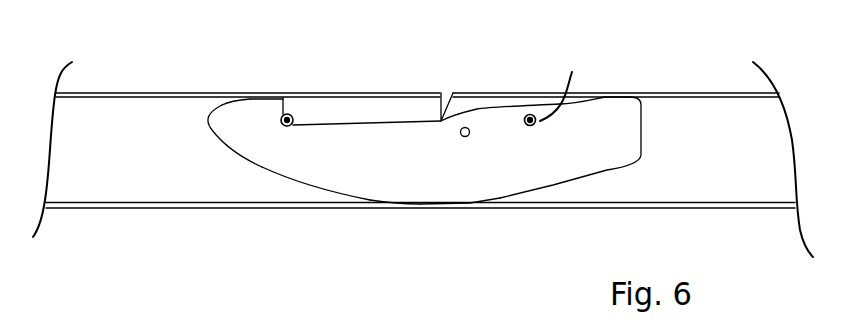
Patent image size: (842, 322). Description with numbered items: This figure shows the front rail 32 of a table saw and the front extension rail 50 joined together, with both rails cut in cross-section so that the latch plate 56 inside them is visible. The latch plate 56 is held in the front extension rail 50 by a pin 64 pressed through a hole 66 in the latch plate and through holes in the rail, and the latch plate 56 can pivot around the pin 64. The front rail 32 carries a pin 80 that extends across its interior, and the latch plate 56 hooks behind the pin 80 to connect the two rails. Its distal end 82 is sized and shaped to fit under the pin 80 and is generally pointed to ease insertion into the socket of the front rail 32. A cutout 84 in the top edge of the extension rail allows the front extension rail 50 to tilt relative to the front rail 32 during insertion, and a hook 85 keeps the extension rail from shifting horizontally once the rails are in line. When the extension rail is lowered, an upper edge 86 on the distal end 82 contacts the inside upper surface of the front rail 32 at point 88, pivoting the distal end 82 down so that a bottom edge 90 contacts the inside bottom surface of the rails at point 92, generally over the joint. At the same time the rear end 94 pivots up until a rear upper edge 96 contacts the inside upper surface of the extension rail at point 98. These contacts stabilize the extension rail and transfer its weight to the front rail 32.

The front rail 32 is at (90, 180).
The front extension rail 50 is at (755, 185).
The latch plate 56 is at (332, 162).
The pin 64 is at (528, 116).
The hole 66 is at (560, 85).
The pin 80 is at (292, 117).
The distal end 82 is at (243, 130).
The cutout 84 is at (452, 93).
The hook 85 is at (284, 100).
The upper edge 86 is at (233, 100).
The point 88 is at (260, 98).
The bottom edge 90 is at (396, 202).
The point 92 is at (440, 203).
The rear end 94 is at (630, 113).
The rear upper edge 96 is at (590, 98).
The point 98 is at (618, 97).